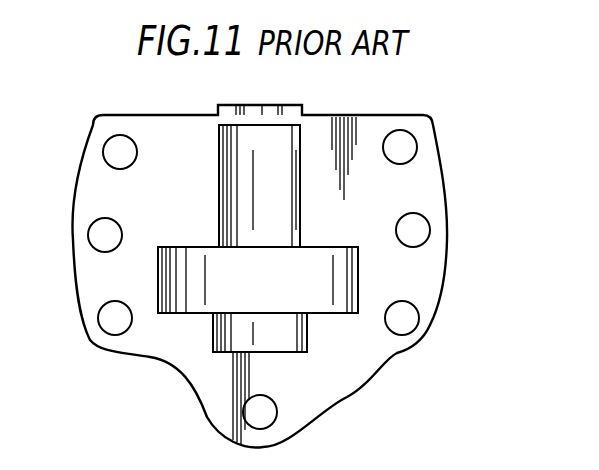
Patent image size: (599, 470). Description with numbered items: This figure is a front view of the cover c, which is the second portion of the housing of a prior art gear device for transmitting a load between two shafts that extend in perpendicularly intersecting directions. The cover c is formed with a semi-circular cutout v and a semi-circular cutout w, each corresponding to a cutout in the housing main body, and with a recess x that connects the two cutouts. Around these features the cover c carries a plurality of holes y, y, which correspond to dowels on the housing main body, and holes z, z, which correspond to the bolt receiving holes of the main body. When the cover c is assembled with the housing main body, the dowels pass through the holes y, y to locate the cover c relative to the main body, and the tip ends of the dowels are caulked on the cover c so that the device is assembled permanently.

The cover c is at (447, 175).
The holes y is at (108, 140).
The holes z is at (94, 228).
The semi-circular cutout v is at (282, 108).
The recess x is at (330, 268).
The semi-circular cutout w is at (283, 338).